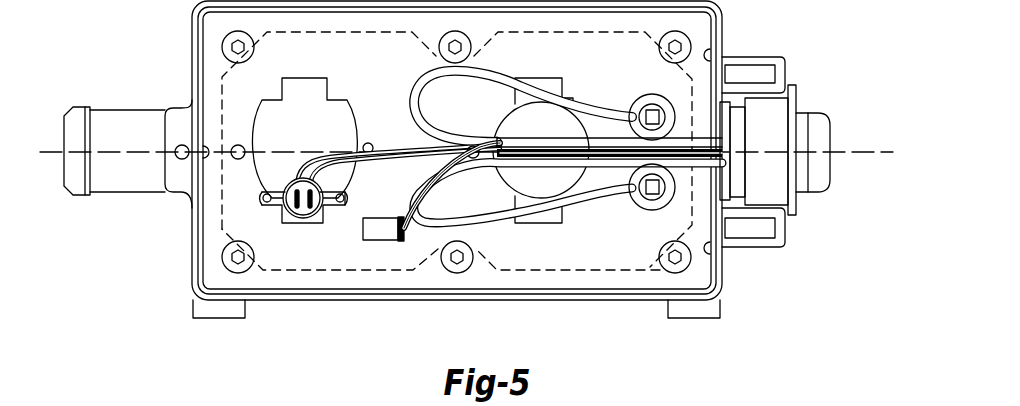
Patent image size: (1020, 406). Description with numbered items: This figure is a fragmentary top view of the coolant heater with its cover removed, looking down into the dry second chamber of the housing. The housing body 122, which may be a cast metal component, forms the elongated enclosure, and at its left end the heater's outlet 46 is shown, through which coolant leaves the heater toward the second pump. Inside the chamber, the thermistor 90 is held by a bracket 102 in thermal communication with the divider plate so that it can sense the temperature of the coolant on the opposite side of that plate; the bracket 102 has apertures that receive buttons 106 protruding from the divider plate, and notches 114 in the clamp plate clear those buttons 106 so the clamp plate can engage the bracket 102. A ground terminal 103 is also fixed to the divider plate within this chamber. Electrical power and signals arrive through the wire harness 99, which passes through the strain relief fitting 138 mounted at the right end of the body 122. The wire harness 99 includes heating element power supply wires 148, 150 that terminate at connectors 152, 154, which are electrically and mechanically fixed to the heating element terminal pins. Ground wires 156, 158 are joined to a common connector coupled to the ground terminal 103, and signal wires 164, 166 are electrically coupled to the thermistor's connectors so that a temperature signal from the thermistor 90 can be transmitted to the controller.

The outlet 46 is at (63, 123).
The thermistor 90 is at (298, 215).
The wire harness 99 is at (700, 179).
The bracket 102 is at (328, 205).
The ground terminal 103 is at (402, 240).
The buttons 106 is at (263, 198).
The notches 114 is at (277, 185).
The body 122 is at (192, 50).
The strain relief fitting 138 is at (793, 95).
The heating element power supply wire 148 is at (495, 101).
The heating element power supply wire 150 is at (603, 188).
The connector 152 is at (648, 108).
The connector 154 is at (648, 187).
The ground wire 156 is at (420, 160).
The ground wire 158 is at (452, 187).
The signal wire 164 is at (308, 173).
The signal wire 166 is at (350, 168).